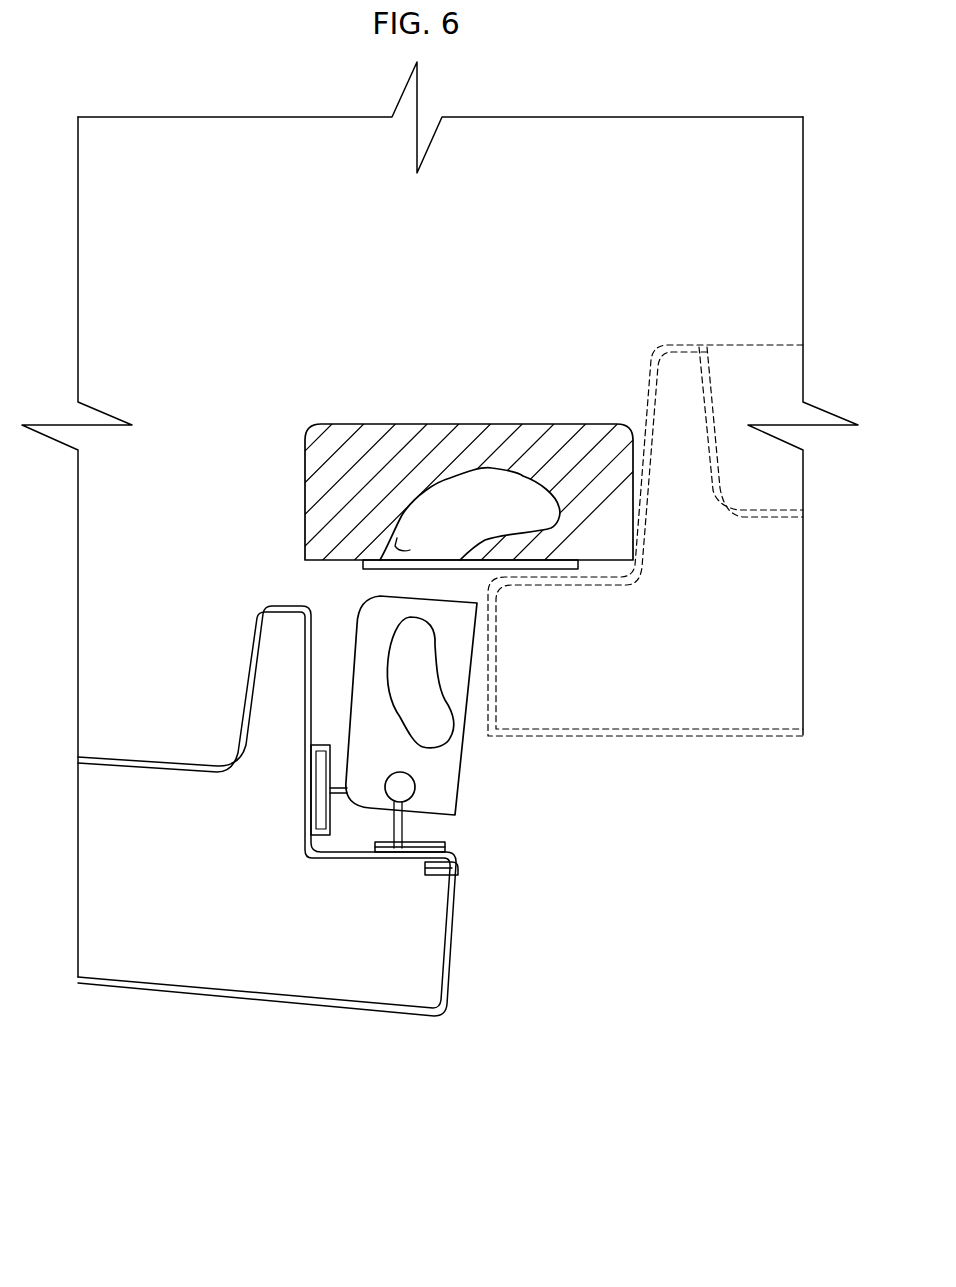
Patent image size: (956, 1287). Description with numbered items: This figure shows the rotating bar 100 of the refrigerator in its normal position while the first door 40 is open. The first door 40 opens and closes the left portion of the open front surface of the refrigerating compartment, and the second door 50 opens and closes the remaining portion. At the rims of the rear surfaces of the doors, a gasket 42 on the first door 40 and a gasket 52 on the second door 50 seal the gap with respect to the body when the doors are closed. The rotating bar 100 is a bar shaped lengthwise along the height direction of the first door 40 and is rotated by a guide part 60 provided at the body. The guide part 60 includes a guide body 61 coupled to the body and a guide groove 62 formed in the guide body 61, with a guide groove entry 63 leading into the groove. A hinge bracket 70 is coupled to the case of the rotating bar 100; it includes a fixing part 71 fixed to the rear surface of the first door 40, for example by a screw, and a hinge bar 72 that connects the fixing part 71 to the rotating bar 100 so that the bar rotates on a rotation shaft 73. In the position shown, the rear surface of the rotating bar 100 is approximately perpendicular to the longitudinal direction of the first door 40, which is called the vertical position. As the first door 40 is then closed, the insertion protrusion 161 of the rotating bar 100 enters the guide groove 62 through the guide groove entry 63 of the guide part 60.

The first door 40 is at (142, 950).
The gasket 42 is at (425, 880).
The second door 50 is at (752, 722).
The gasket 52 is at (560, 578).
The guide part 60 is at (375, 423).
The guide body 61 is at (597, 432).
The guide groove 62 is at (523, 480).
The guide groove entry 63 is at (397, 538).
The hinge bracket 70 is at (347, 960).
The fixing part 71 is at (313, 853).
The hinge bar 72 is at (348, 797).
The rotation shaft 73 is at (400, 787).
The rotating bar 100 is at (408, 757).
The insertion protrusion 161 is at (437, 730).